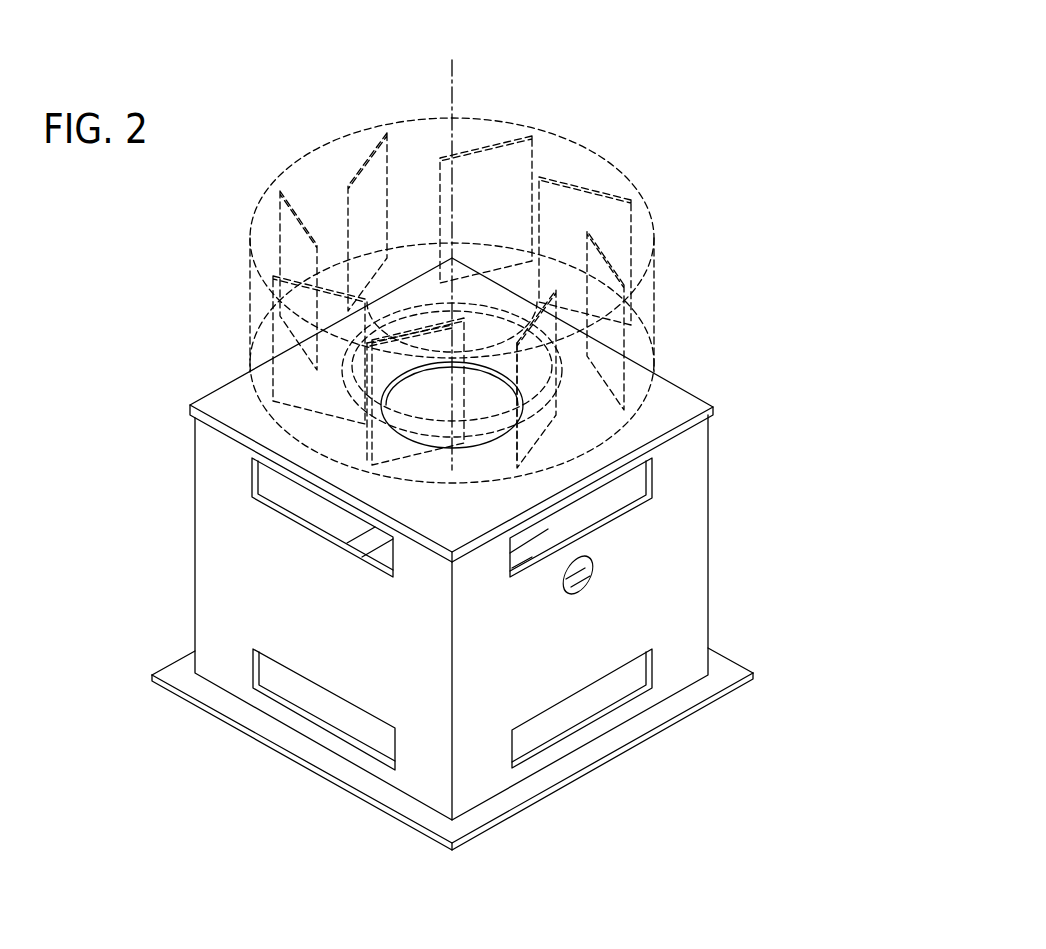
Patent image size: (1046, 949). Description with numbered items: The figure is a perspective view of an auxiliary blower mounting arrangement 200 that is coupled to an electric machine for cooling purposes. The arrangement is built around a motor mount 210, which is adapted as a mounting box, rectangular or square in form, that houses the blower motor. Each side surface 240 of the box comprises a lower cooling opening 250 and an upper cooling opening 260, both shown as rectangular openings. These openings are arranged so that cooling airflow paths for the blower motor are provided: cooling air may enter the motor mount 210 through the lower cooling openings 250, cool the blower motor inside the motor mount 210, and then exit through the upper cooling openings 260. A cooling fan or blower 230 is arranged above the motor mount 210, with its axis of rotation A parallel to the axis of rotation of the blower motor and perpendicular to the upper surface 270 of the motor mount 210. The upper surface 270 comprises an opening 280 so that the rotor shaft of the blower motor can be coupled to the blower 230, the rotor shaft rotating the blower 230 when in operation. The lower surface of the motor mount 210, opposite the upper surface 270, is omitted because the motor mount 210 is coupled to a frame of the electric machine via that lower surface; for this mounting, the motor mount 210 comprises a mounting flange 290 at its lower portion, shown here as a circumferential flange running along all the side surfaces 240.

The auxiliary blower mounting arrangement 200 is at (638, 97).
The motor mount 210 is at (712, 608).
The blower 230 is at (583, 160).
The side surface 240 is at (208, 508).
The lower cooling opening 250 is at (323, 707).
The upper cooling opening 260 is at (303, 503).
The upper surface 270 is at (675, 392).
The opening 280 is at (473, 448).
The mounting flange 290 is at (178, 672).
The axis of rotation A is at (452, 75).